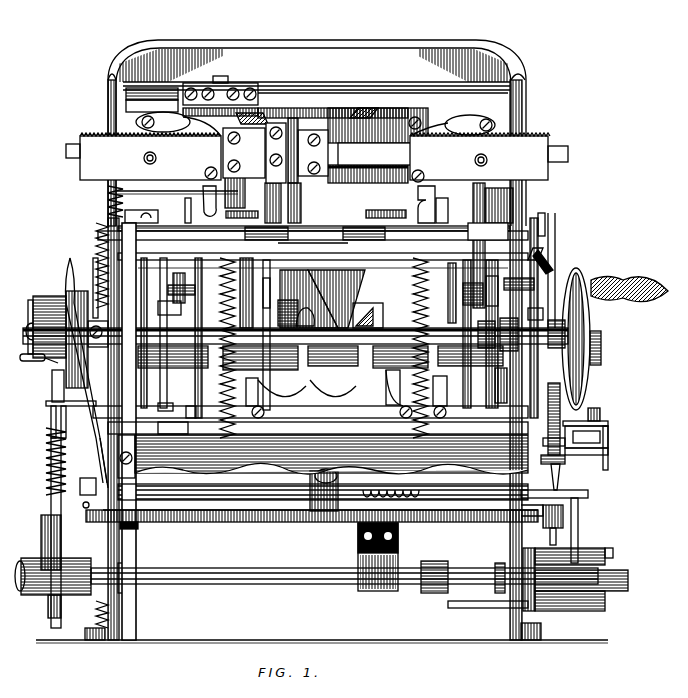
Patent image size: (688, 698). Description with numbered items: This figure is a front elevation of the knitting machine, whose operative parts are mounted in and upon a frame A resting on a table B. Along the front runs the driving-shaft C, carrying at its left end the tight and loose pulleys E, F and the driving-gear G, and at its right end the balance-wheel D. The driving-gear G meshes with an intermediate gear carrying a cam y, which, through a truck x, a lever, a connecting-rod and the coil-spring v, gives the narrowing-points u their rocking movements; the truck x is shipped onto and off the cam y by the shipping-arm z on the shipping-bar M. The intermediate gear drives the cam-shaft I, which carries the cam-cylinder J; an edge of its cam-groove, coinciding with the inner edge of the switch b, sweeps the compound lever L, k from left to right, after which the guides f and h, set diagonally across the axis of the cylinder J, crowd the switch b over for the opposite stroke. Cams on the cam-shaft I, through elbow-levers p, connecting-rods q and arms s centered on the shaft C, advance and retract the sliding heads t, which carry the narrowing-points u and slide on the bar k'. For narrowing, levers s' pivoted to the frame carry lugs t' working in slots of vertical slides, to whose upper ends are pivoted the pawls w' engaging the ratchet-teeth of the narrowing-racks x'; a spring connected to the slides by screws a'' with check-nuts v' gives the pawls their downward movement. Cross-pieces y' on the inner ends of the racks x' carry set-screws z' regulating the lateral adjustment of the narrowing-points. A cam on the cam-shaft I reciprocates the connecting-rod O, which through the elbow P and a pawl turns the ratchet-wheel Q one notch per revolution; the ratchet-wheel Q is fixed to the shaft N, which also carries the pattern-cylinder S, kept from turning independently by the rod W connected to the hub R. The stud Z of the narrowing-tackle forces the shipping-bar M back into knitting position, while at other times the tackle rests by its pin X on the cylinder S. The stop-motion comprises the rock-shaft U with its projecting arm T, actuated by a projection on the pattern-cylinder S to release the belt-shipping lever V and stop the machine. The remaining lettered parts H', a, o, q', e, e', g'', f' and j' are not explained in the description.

The pawl w' is at (315, 124).
The narrowing-rack x' is at (317, 157).
The coil-spring v is at (120, 201).
The cam y is at (209, 200).
The set-screw z' is at (316, 218).
The cross-piece y' is at (473, 302).
The sliding head t is at (315, 242).
The bar k' is at (313, 245).
The connecting-rod q is at (94, 265).
The elbow-lever p is at (92, 292).
The tight pulley E is at (46, 319).
The loose pulley F is at (37, 317).
The driving-gear G is at (83, 339).
The bracket H' is at (40, 386).
The connecting-rod O is at (68, 419).
The lever s' is at (180, 288).
The shipping-arm z is at (129, 431).
The driving-shaft C is at (258, 318).
The block a is at (259, 348).
The compound lever arm k is at (309, 299).
The compound lever L is at (336, 299).
The switch b is at (305, 317).
The cam-cylinder J is at (368, 308).
The narrowing-point u is at (473, 294).
The arm s is at (494, 291).
The collar o is at (523, 299).
The arm q' is at (540, 257).
The balance-wheel D is at (615, 339).
The cam-shaft I is at (593, 340).
The guide h is at (282, 392).
The guide f is at (333, 388).
The arm e is at (390, 388).
The shipping-bar M is at (318, 420).
The spring e' is at (428, 348).
The post g'' is at (444, 399).
The rod f' is at (323, 442).
The screw a'' is at (329, 414).
The check-nut v' is at (316, 427).
The lug t' is at (192, 412).
The stud Z is at (593, 440).
The post j' is at (549, 419).
The belt-shipping lever V is at (107, 456).
The truck x is at (101, 457).
The rock-shaft U is at (323, 484).
The frame A is at (331, 454).
The table B is at (312, 525).
The shaft N is at (344, 566).
The hub R is at (434, 568).
The rod W is at (488, 612).
The elbow P is at (53, 555).
The ratchet-wheel Q is at (54, 614).
The projecting arm T is at (556, 526).
The vertically-sliding pin X is at (555, 526).
The pattern-cylinder S is at (581, 572).